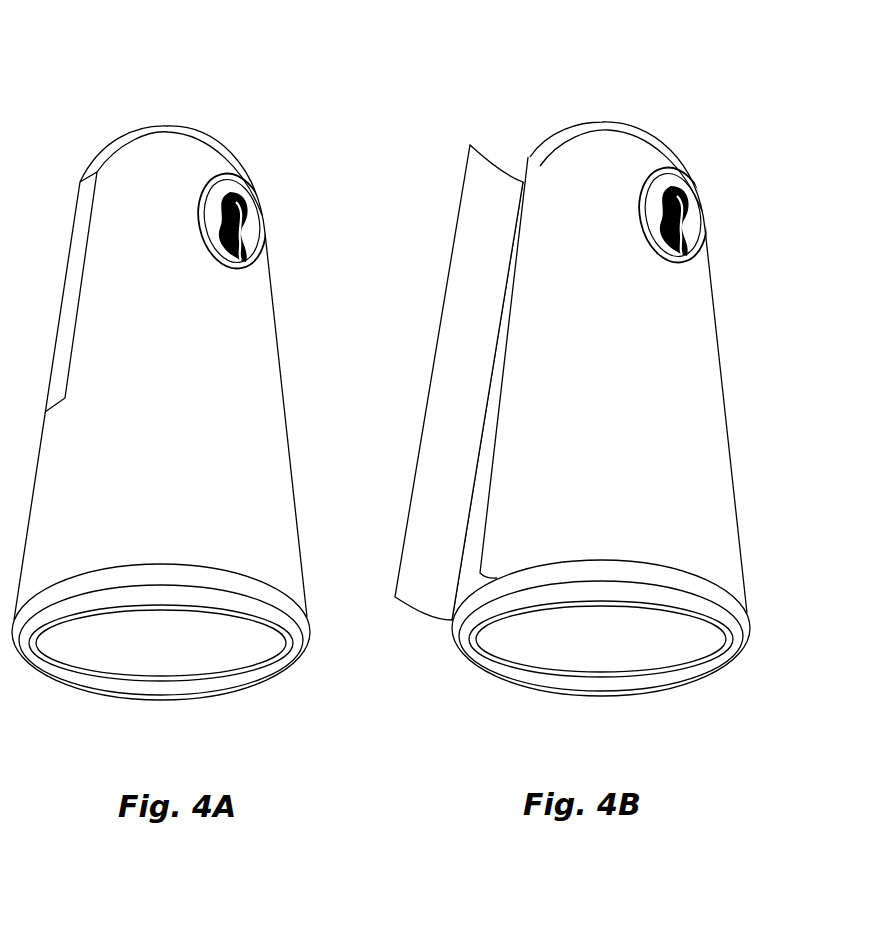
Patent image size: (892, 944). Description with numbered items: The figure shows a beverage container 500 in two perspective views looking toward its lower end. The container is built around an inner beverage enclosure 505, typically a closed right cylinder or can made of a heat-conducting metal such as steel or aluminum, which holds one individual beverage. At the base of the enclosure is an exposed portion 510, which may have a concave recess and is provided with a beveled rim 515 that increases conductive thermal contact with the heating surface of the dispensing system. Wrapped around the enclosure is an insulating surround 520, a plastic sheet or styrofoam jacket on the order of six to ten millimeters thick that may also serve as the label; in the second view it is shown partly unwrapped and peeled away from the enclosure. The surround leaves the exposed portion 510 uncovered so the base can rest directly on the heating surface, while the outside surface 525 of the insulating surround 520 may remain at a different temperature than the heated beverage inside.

In FIG. 4A, the beverage container 500 is at (197, 378).
In FIG. 4B, the beverage container 500 is at (549, 386).
In FIG. 4A, the beverage enclosure 505 is at (193, 643).
In FIG. 4B, the beverage enclosure 505 is at (562, 650).
In FIG. 4A, the exposed portion 510 is at (132, 655).
In FIG. 4A, the beveled rim 515 is at (42, 598).
In FIG. 4B, the insulating surround 520 is at (475, 160).
In FIG. 4A, the outside surface 525 is at (190, 155).